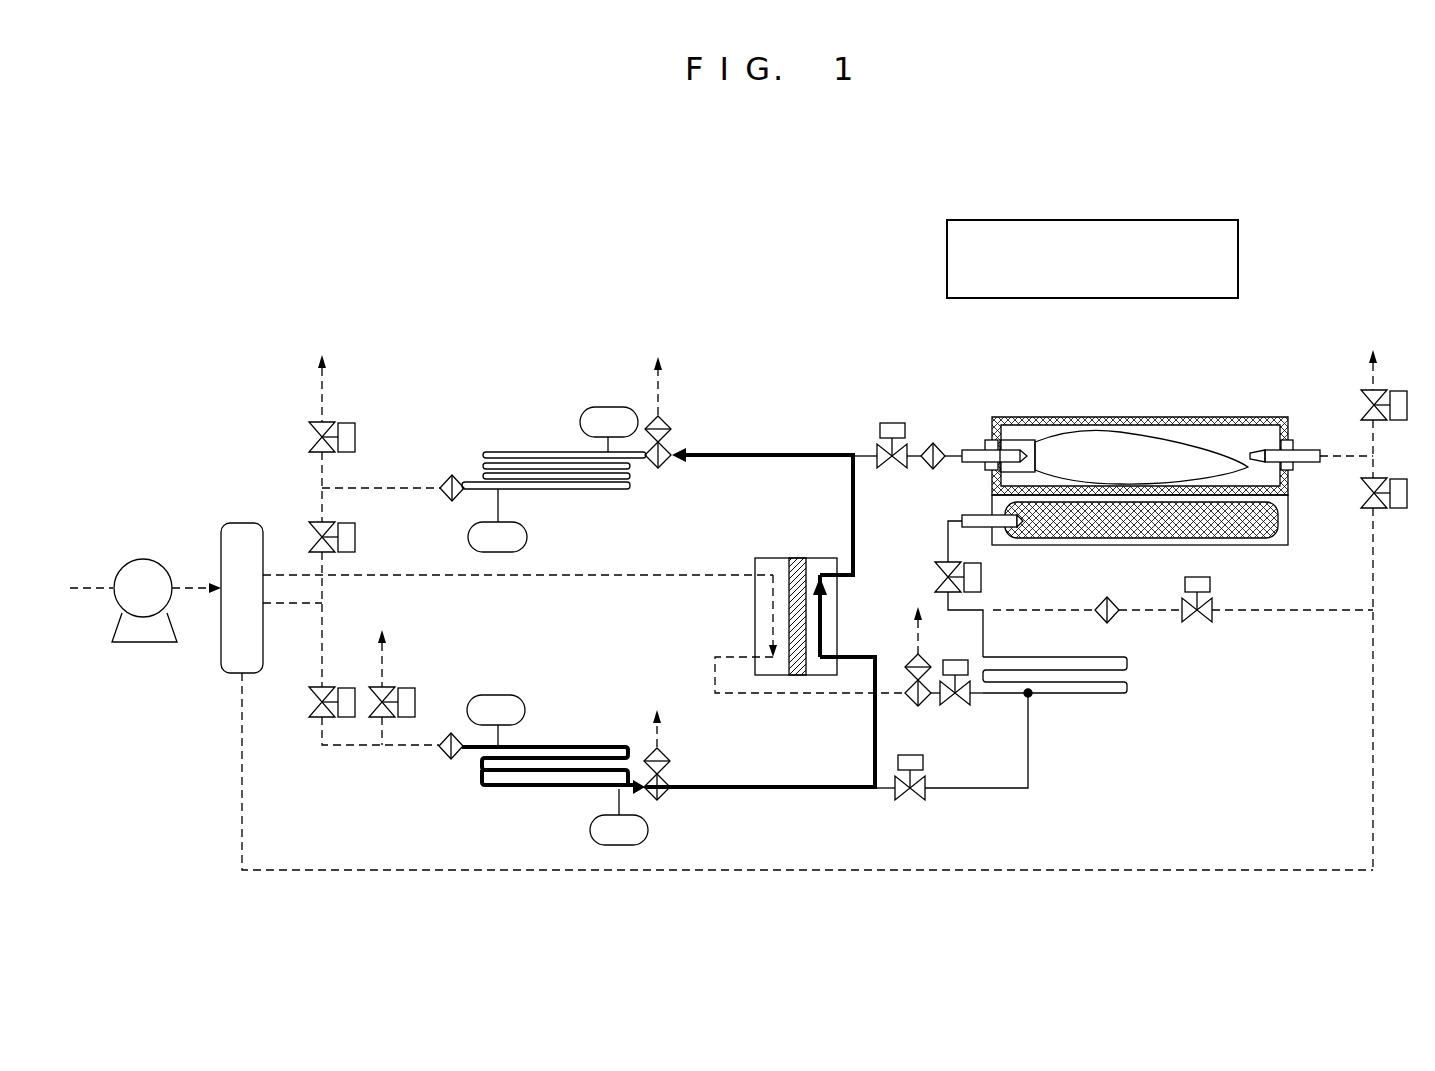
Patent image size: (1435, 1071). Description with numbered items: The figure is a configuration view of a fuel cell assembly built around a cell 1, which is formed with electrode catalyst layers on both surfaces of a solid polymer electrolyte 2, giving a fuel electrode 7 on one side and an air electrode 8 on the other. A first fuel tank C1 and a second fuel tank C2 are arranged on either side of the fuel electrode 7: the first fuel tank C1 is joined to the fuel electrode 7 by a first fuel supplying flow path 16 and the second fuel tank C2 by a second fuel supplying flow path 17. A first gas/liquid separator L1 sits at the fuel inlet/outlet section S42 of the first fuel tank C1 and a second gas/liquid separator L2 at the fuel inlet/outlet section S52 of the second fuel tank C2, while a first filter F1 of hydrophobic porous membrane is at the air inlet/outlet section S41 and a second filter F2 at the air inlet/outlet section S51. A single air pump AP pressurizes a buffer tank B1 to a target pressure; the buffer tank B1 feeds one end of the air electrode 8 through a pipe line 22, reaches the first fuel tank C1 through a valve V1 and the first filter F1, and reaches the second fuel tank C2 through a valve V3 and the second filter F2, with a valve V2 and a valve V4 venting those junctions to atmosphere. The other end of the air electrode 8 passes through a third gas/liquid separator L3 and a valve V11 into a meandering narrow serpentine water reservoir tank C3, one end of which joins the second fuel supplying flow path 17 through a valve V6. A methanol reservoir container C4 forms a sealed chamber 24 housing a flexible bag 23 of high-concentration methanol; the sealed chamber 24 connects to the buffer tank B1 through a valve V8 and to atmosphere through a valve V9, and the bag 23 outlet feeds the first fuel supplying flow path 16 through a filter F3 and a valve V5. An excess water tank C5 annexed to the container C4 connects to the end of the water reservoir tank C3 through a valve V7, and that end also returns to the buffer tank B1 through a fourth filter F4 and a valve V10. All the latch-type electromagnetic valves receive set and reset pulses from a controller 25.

The cell 1 is at (796, 553).
The solid polymer electrolyte 2 is at (800, 675).
The fuel electrode 7 is at (823, 615).
The air electrode 8 is at (773, 617).
The first fuel supplying flow path 16 is at (745, 454).
The second fuel supplying flow path 17 is at (775, 790).
The pipe line 22 is at (537, 575).
The flexible bag 23 is at (1067, 445).
The sealed chamber 24 is at (1237, 430).
The controller 25 is at (1150, 220).
The air pump AP is at (144, 600).
The buffer tank B1 is at (242, 598).
The first fuel tank C1 is at (538, 450).
The second fuel tank C2 is at (555, 736).
The water reservoir tank C3 is at (1102, 700).
The methanol reservoir container C4 is at (1130, 412).
The excess water tank C5 is at (1232, 533).
The valve V1 is at (321, 537).
The valve V2 is at (321, 437).
The valve V3 is at (321, 687).
The valve V4 is at (393, 687).
The valve V5 is at (880, 459).
The valve V6 is at (900, 792).
The valve V7 is at (950, 589).
The valve V8 is at (1369, 494).
The valve V9 is at (1370, 405).
The valve V10 is at (1200, 615).
The valve V11 is at (955, 696).
The first filter F1 is at (444, 482).
The second filter F2 is at (446, 759).
The filter F3 is at (934, 441).
The fourth filter F4 is at (1107, 597).
The first gas/liquid separator L1 is at (665, 425).
The second gas/liquid separator L2 is at (674, 755).
The third gas/liquid separator L3 is at (912, 667).
The air inlet/outlet section S41 is at (497, 520).
The fuel inlet/outlet section S42 is at (609, 429).
The air inlet/outlet section S51 is at (496, 720).
The fuel inlet/outlet section S52 is at (619, 817).